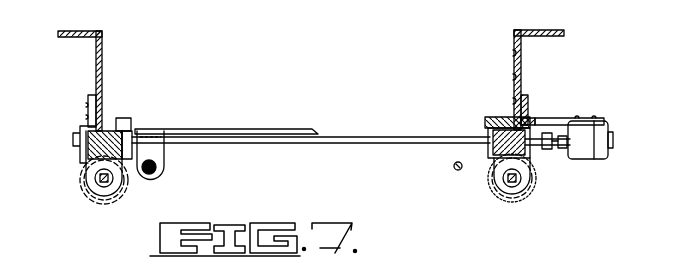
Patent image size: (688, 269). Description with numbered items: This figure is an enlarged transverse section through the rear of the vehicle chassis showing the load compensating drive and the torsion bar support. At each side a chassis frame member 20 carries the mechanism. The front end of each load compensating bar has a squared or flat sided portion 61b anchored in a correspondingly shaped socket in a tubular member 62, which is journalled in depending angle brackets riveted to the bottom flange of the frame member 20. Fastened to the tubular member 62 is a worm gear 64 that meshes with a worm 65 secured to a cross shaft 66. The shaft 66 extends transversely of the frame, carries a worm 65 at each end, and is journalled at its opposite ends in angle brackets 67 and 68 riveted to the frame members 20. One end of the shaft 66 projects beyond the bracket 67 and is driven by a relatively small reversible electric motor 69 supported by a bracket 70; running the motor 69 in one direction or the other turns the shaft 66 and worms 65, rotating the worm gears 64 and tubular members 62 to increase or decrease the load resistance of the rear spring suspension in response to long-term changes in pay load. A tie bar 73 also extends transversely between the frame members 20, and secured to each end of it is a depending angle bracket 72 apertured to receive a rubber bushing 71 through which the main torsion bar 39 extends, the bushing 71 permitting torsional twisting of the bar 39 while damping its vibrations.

The chassis frame member 20 is at (102, 62).
The angle bracket 67 is at (78, 137).
The angle bracket 68 is at (125, 128).
The worm 65 is at (122, 122).
The worm gear 64 is at (90, 171).
The tubular member 62 is at (112, 186).
The squared or flat sided portion 61b is at (104, 184).
The cross shaft 66 is at (246, 145).
The tie bar 73 is at (265, 128).
The depending angle bracket 72 is at (165, 160).
The rubber bushing 71 is at (156, 168).
The main torsion bar 39 is at (151, 174).
The bracket 70 is at (558, 120).
The reversible electric motor 69 is at (600, 152).